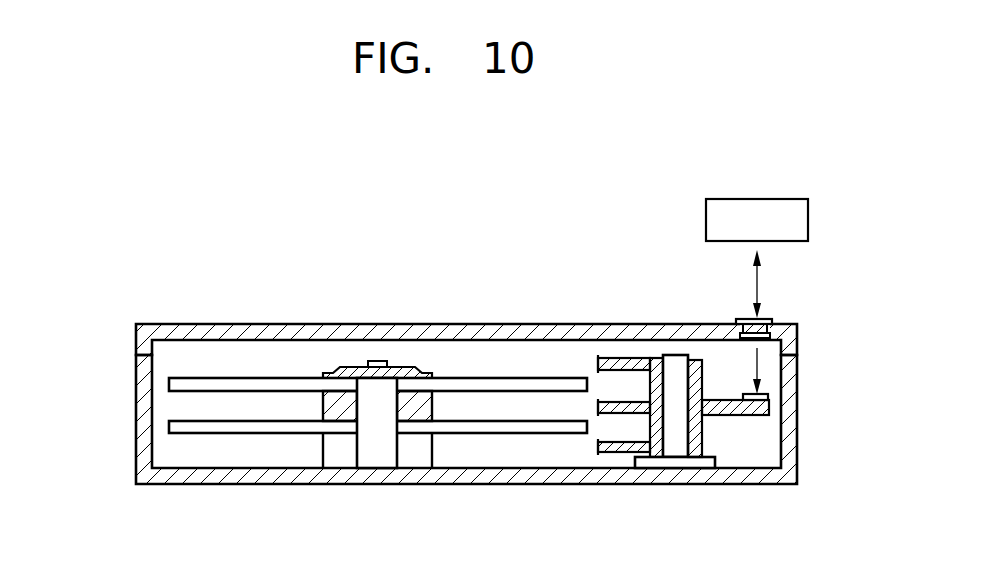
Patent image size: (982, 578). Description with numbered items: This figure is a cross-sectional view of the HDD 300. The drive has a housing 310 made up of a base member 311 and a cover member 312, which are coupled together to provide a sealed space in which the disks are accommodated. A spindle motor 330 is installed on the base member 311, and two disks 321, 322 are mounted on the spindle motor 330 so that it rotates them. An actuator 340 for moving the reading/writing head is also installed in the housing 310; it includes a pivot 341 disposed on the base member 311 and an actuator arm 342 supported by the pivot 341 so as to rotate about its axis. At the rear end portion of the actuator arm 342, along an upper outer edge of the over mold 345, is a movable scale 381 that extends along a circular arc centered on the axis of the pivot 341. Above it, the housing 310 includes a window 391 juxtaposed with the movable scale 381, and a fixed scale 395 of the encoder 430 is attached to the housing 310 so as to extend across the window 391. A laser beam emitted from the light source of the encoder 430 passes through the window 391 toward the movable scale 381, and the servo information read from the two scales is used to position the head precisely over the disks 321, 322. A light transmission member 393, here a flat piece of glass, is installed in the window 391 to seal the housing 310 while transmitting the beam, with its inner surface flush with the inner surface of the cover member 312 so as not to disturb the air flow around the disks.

The HDD 300 is at (119, 269).
The housing 310 is at (64, 333).
The base member 311 is at (136, 408).
The cover member 312 is at (136, 342).
The disk 321 is at (515, 385).
The disk 322 is at (453, 430).
The spindle motor 330 is at (382, 460).
The actuator 340 is at (732, 452).
The pivot 341 is at (675, 460).
The actuator arm 342 is at (610, 448).
The over mold 345 is at (768, 415).
The movable scale 381 is at (768, 392).
The window 391 is at (752, 318).
The light transmission member 393 is at (797, 359).
The fixed scale 395 is at (768, 317).
The encoder 430 is at (757, 199).